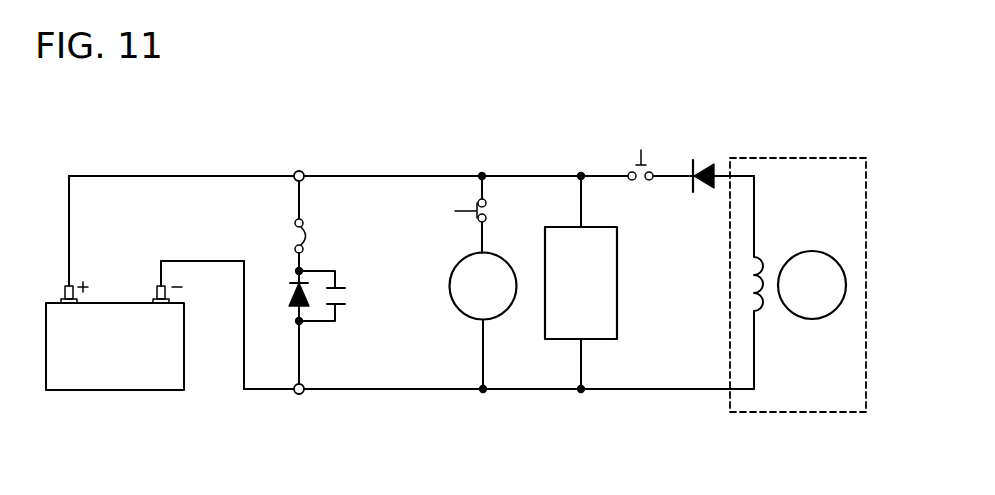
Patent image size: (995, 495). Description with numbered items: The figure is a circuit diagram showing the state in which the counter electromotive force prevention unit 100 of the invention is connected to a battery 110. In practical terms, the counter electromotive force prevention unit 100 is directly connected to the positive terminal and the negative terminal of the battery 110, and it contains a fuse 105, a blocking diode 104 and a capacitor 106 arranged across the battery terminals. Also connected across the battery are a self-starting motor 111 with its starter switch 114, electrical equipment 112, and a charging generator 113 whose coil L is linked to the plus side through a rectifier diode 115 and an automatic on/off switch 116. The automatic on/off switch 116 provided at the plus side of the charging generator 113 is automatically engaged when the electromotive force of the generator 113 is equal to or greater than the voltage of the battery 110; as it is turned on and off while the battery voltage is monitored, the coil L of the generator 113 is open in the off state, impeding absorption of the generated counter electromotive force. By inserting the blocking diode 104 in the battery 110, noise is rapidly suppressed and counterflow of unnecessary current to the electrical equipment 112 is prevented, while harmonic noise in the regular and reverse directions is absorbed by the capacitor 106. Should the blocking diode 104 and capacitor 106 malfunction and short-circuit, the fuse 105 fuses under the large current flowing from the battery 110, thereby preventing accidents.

The counter electromotive force prevention unit 100 is at (280, 213).
The blocking diode 104 is at (287, 288).
The fuse 105 is at (307, 240).
The capacitor 106 is at (352, 293).
The battery 110 is at (116, 390).
The self-starting motor 111 is at (453, 265).
The electrical equipment 112 is at (617, 290).
The generator 113 is at (795, 158).
The starter switch 114 is at (462, 200).
The rectifier diode 115 is at (705, 160).
The automatic on/off switch 116 is at (632, 168).
The coil L is at (763, 310).